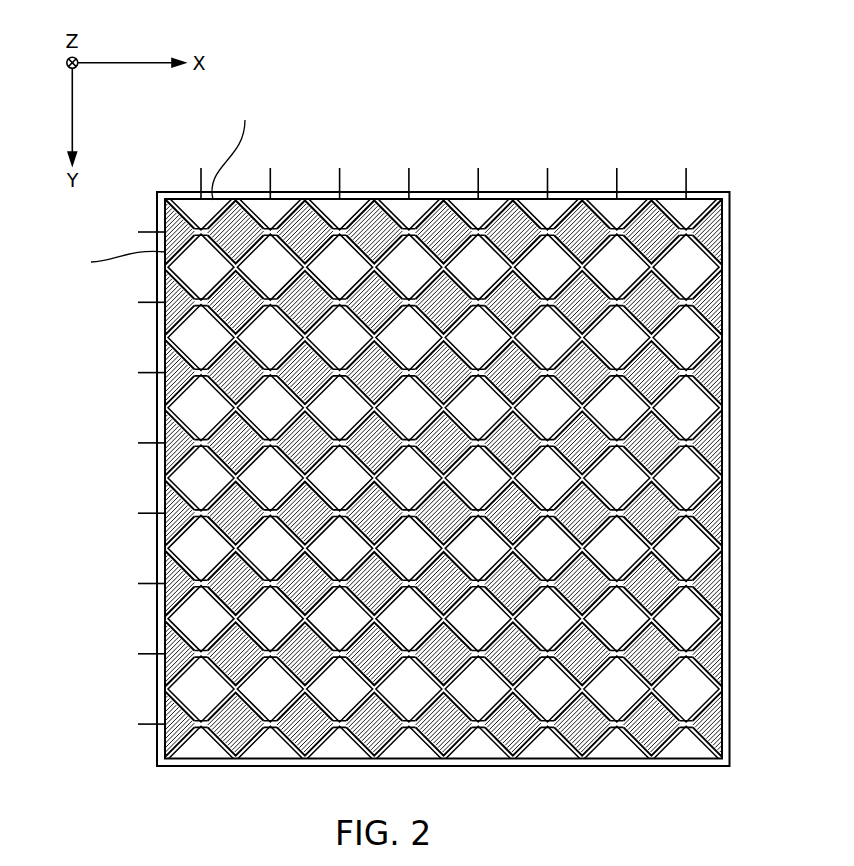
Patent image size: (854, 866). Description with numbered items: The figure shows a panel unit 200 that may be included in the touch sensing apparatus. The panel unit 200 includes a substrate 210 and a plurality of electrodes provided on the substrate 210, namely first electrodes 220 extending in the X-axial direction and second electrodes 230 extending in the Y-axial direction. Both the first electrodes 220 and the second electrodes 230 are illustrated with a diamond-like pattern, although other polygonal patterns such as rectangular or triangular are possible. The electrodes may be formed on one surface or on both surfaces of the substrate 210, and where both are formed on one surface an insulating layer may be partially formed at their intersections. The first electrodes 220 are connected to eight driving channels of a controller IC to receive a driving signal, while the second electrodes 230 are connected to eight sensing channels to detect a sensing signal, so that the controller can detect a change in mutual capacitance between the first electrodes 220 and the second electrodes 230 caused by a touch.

The panel unit 200 is at (535, 105).
The substrate 210 is at (166, 193).
The first electrodes 220 is at (166, 252).
The second electrodes 230 is at (213, 200).